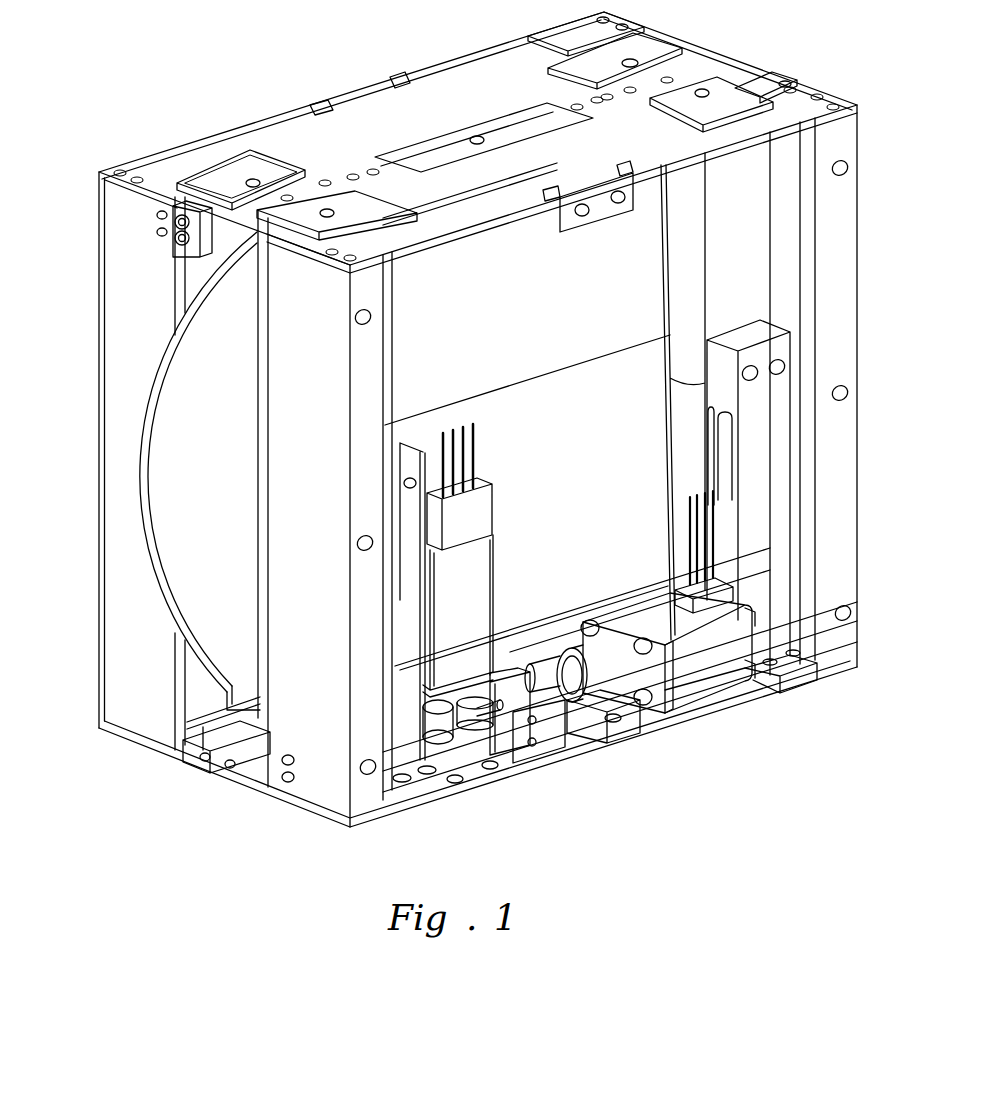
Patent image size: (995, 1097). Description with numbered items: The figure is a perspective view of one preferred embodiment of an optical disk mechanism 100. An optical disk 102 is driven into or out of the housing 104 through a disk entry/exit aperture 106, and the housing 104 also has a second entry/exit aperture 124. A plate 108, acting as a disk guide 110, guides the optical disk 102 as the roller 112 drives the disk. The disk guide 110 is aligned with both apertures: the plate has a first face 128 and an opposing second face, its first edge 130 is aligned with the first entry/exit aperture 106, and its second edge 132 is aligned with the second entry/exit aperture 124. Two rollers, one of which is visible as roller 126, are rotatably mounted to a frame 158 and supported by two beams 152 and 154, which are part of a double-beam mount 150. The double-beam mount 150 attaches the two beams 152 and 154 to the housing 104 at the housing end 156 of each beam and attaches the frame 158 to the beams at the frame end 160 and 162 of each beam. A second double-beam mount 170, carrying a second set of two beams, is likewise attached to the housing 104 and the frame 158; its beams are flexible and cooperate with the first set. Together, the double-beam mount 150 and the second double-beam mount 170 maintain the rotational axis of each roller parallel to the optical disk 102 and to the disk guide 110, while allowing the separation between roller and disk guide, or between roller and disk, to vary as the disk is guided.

The optical disk mechanism 100 is at (89, 371).
The optical disk 102 is at (215, 458).
The housing 104 is at (321, 571).
The disk entry/exit aperture 106 is at (240, 697).
The plate 108 is at (262, 296).
The disk guide 110 is at (548, 72).
The roller 112 is at (240, 230).
The second entry/exit aperture 124 is at (683, 46).
The roller 126 is at (667, 298).
The first face 128 is at (503, 351).
The first edge 130 is at (257, 380).
The second edge 132 is at (695, 73).
The double-beam mount 150 is at (780, 523).
The beam 152 is at (723, 463).
The beam 154 is at (743, 480).
The housing end 156 is at (777, 623).
The frame 158 is at (756, 232).
The frame end 160 is at (708, 426).
The frame end 162 is at (740, 433).
The second double-beam mount 170 is at (418, 711).